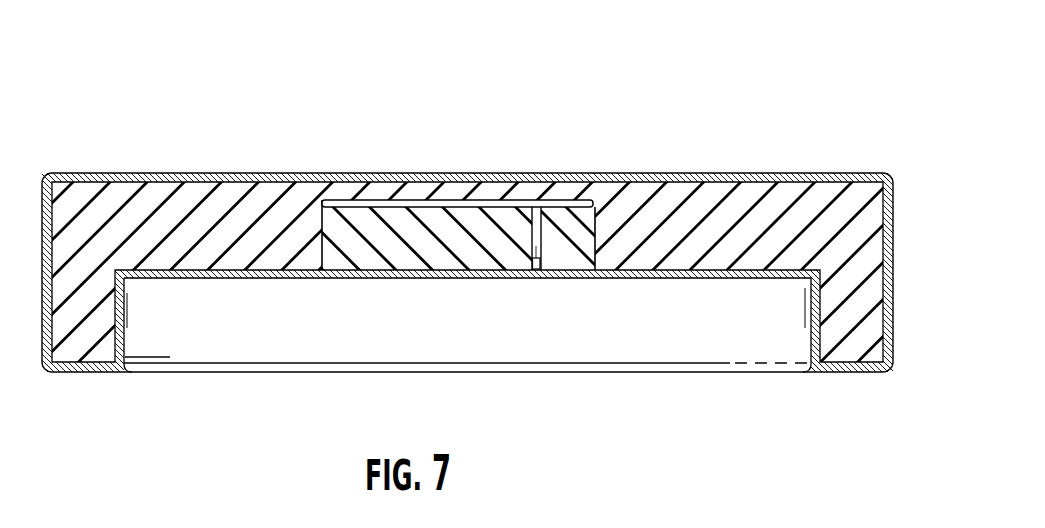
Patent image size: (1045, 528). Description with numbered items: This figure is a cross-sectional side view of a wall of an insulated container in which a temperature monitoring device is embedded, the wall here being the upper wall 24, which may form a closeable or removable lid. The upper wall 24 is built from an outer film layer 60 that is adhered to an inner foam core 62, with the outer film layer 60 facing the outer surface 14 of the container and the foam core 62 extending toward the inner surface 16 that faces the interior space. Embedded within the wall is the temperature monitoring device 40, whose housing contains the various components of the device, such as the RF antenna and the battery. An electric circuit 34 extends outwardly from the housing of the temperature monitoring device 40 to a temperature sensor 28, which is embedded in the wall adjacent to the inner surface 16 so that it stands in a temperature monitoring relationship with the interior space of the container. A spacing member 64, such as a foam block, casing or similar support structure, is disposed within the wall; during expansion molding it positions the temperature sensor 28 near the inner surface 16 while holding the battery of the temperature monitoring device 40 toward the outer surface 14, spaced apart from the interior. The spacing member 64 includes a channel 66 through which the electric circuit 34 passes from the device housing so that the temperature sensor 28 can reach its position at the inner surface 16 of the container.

The upper wall 24 is at (832, 105).
The outer surface 14 is at (767, 170).
The inner foam core 62 is at (890, 230).
The outer film layer 60 is at (893, 267).
The inner surface 16 is at (652, 285).
The temperature sensor 28 is at (537, 270).
The electric circuit 34 is at (540, 246).
The temperature monitoring device 40 is at (510, 204).
The spacing member 64 is at (353, 222).
The channel 66 is at (595, 199).